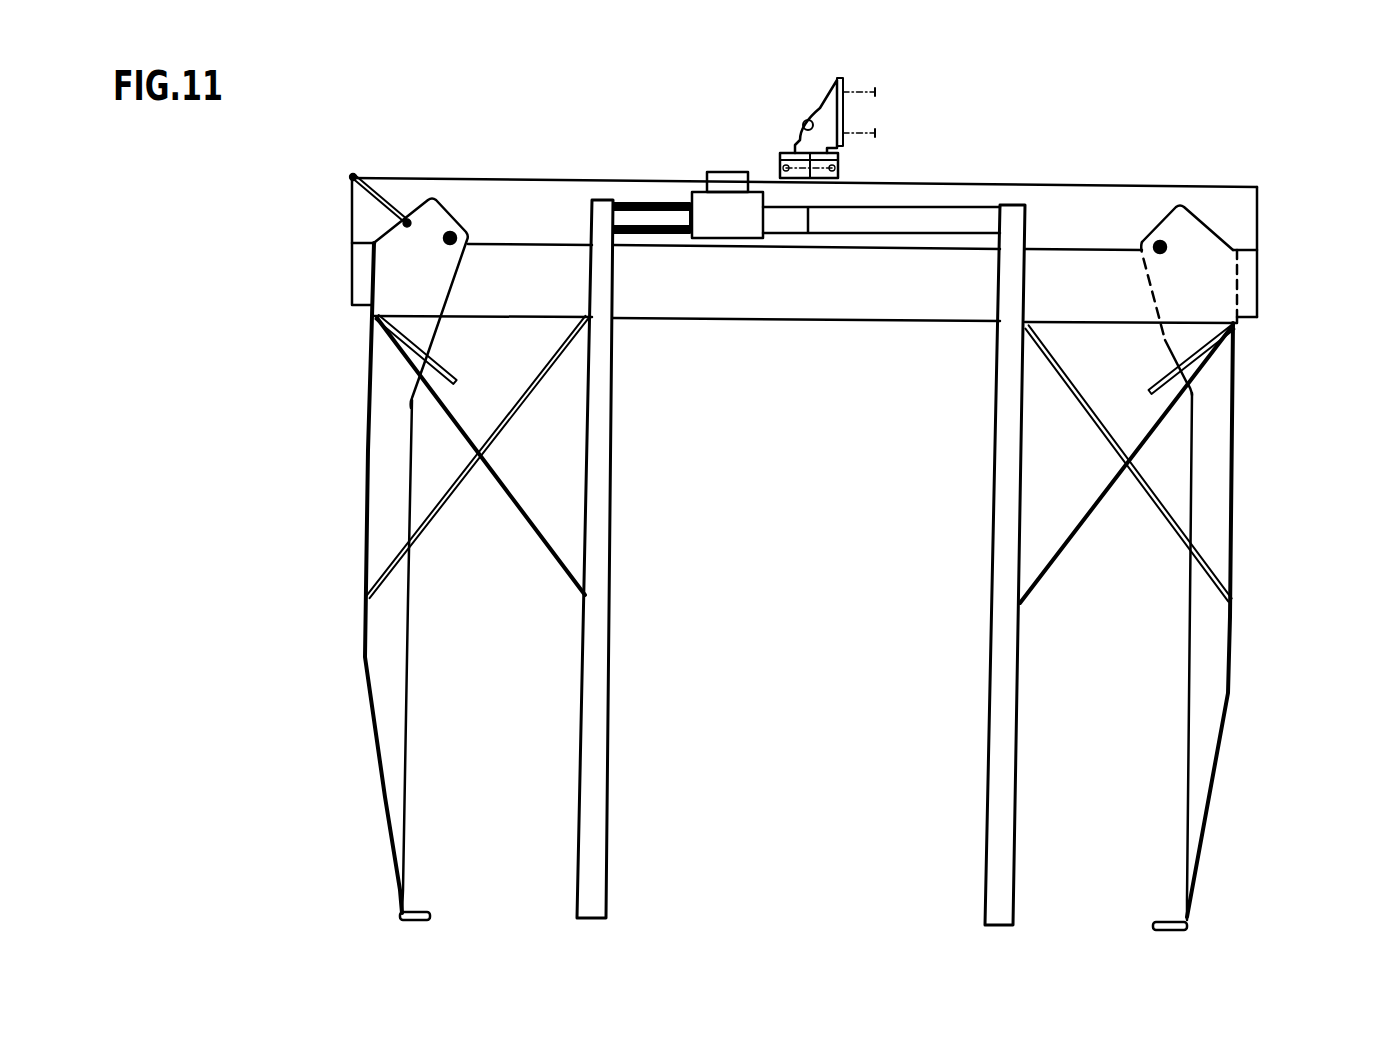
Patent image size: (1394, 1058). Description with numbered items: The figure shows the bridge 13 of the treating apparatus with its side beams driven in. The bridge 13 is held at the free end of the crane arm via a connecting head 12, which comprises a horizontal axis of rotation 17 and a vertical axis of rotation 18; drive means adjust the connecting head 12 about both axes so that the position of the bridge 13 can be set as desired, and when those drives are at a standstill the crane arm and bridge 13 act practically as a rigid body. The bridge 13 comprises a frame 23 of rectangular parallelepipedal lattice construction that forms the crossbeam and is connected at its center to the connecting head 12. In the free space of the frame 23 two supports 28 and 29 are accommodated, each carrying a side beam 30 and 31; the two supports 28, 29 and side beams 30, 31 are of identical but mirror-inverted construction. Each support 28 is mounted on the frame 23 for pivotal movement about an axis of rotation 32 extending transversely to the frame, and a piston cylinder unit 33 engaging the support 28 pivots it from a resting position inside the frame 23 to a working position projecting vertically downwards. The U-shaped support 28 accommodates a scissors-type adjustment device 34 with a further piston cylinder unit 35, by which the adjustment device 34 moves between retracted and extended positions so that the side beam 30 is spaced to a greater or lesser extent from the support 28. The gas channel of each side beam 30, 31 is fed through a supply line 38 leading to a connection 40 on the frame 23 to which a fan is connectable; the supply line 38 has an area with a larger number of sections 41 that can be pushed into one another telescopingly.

The connecting head 12 is at (807, 96).
The bridge 13 is at (1178, 172).
The horizontal axis of rotation 17 is at (803, 126).
The vertical axis of rotation 18 is at (780, 157).
The frame 23 is at (1233, 223).
The support 28 is at (382, 502).
The support 29 is at (1223, 527).
The side beam 30 is at (605, 580).
The side beam 31 is at (998, 560).
The axis of rotation 32 is at (450, 232).
The piston cylinder unit 33 is at (382, 196).
The scissors-type adjustment device 34 is at (497, 438).
The piston cylinder unit 35 is at (440, 360).
The supply line 38 is at (650, 236).
The connection 40 is at (733, 230).
The sections 41 is at (788, 222).